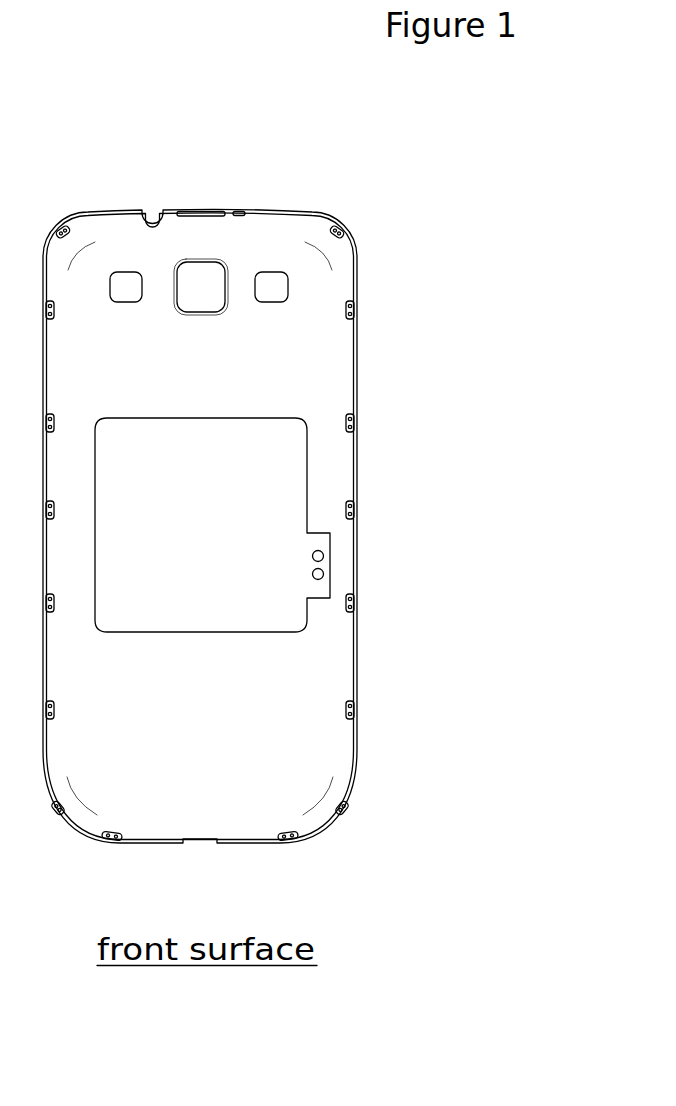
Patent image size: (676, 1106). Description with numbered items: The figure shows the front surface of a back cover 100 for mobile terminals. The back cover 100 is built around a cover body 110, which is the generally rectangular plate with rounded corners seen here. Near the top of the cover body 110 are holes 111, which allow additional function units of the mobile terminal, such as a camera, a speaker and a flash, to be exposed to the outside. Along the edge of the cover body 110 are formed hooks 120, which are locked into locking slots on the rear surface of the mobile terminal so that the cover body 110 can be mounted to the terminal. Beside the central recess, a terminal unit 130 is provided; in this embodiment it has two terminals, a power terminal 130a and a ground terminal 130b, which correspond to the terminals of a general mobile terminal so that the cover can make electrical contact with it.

The back cover 100 is at (346, 160).
The cover body 110 is at (356, 252).
The holes 111 is at (127, 280).
The hooks 120 is at (356, 418).
The terminal unit 130 is at (527, 520).
The power terminal 130a is at (324, 553).
The ground terminal 130b is at (324, 574).